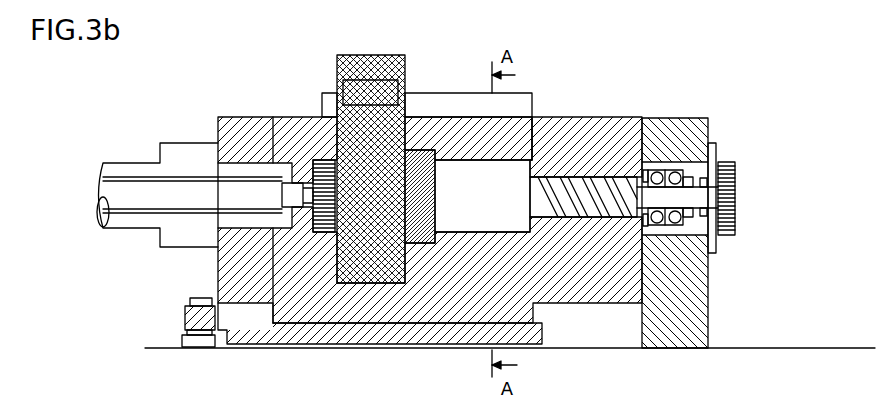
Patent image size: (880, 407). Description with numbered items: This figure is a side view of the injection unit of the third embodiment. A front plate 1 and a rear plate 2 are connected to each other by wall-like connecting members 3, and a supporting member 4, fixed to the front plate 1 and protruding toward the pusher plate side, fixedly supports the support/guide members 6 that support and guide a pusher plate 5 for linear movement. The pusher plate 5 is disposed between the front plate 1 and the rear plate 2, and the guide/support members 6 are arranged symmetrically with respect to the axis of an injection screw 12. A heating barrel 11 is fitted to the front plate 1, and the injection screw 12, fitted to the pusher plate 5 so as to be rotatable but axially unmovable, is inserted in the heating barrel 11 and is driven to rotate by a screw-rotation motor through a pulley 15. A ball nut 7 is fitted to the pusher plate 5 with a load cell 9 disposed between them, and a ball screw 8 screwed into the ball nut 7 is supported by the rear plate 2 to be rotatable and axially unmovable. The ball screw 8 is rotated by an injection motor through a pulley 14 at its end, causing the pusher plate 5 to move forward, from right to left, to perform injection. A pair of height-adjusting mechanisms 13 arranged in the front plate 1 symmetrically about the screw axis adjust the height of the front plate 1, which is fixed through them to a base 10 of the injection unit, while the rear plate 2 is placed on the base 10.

The front plate 1 is at (243, 118).
The rear plate 2 is at (683, 118).
The wall-like connecting members 3 is at (592, 304).
The supporting member 4 is at (358, 346).
The pusher plate 5 is at (392, 55).
The support/guide members 6 is at (318, 102).
The ball nut 7 is at (517, 165).
The ball screw 8 is at (571, 177).
The load cell 9 is at (428, 150).
The base 10 is at (170, 350).
The heating barrel 11 is at (150, 163).
The injection screw 12 is at (143, 205).
The height-adjusting mechanisms 13 is at (198, 297).
The pulley 14 is at (722, 162).
The pulley 15 is at (316, 160).